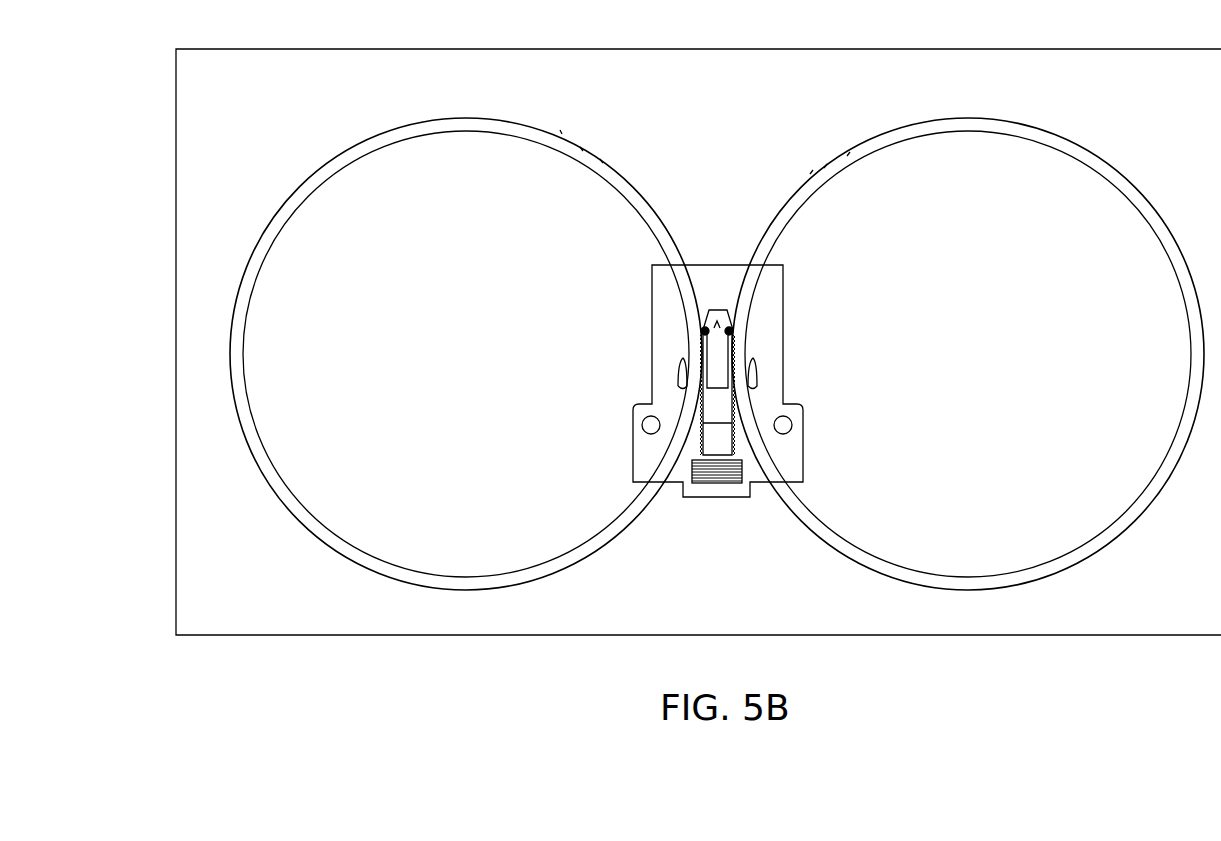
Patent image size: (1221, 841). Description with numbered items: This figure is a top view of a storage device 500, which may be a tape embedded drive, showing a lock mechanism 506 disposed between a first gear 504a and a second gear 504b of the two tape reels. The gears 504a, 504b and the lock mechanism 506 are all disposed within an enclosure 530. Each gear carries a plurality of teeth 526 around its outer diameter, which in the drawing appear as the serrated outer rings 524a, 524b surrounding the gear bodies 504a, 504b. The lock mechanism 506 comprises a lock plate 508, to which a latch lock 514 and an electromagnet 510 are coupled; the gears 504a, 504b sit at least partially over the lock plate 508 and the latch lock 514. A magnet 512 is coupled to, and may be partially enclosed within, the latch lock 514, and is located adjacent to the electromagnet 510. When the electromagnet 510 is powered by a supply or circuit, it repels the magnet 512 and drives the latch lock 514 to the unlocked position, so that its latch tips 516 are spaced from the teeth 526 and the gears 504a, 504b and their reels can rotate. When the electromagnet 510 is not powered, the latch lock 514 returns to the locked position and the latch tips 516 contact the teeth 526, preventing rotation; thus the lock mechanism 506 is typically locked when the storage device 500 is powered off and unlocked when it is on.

The storage device 500 is at (142, 108).
The enclosure 530 is at (176, 233).
The first gear ring 524a is at (307, 175).
The second gear ring 524b is at (1148, 175).
The first gear 504a is at (470, 131).
The second gear 504b is at (965, 131).
The teeth 526 is at (600, 162).
The lock mechanism 506 is at (713, 252).
The lock plate 508 is at (665, 283).
The magnet 512 is at (718, 438).
The latch lock 514 is at (712, 398).
The latch tips 516 is at (703, 326).
The electromagnet 510 is at (718, 483).